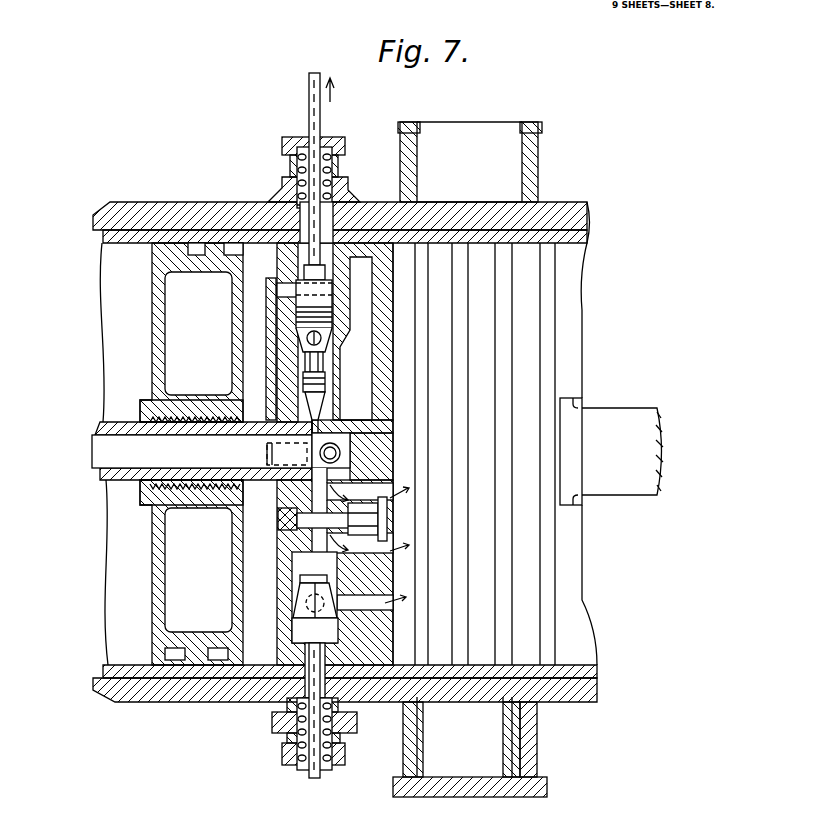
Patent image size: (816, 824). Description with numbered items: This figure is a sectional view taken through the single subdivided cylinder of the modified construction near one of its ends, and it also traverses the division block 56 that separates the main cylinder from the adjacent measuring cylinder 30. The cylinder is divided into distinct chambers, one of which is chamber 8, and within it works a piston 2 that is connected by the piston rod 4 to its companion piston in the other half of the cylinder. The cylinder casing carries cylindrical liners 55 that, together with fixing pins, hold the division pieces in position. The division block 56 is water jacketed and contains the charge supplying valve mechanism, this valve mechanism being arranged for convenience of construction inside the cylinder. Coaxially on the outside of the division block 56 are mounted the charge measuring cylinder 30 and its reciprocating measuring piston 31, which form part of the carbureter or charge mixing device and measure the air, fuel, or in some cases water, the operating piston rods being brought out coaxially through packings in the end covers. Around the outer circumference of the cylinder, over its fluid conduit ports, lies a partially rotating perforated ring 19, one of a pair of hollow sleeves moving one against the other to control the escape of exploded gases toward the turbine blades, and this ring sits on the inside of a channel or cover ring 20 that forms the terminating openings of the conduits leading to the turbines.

The piston 2 is at (528, 562).
The piston rod 4 is at (611, 451).
The chamber 8 is at (314, 788).
The perforated ring 19 is at (457, 775).
The cover ring 20 is at (515, 787).
The measuring cylinder 30 is at (117, 423).
The measuring piston 31 is at (237, 525).
The cylindrical liner 55 is at (570, 238).
The division block 56 is at (377, 653).